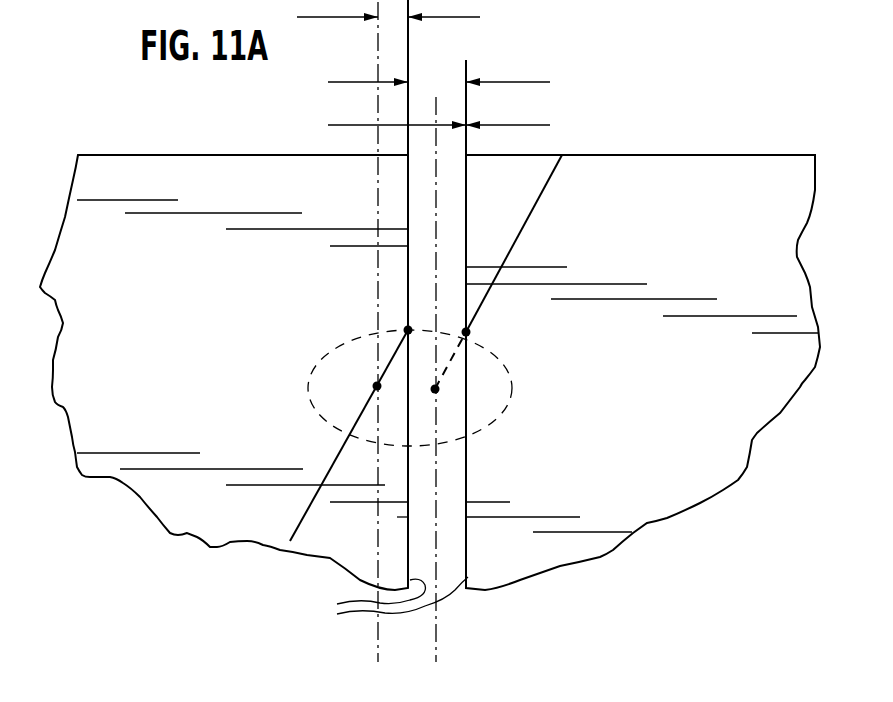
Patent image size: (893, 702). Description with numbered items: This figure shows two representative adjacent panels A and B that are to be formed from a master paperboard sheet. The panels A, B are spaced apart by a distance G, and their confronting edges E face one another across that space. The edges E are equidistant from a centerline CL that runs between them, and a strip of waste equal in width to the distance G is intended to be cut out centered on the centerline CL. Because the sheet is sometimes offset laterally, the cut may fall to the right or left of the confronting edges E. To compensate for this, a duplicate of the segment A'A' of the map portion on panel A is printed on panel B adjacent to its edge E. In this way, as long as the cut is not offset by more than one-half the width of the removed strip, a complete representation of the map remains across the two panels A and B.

The panel A is at (224, 372).
The panel B is at (643, 372).
The confronting edge E is at (390, 600).
The distance G is at (449, 83).
The centerline CL is at (438, 642).
The segment A' is at (423, 70).